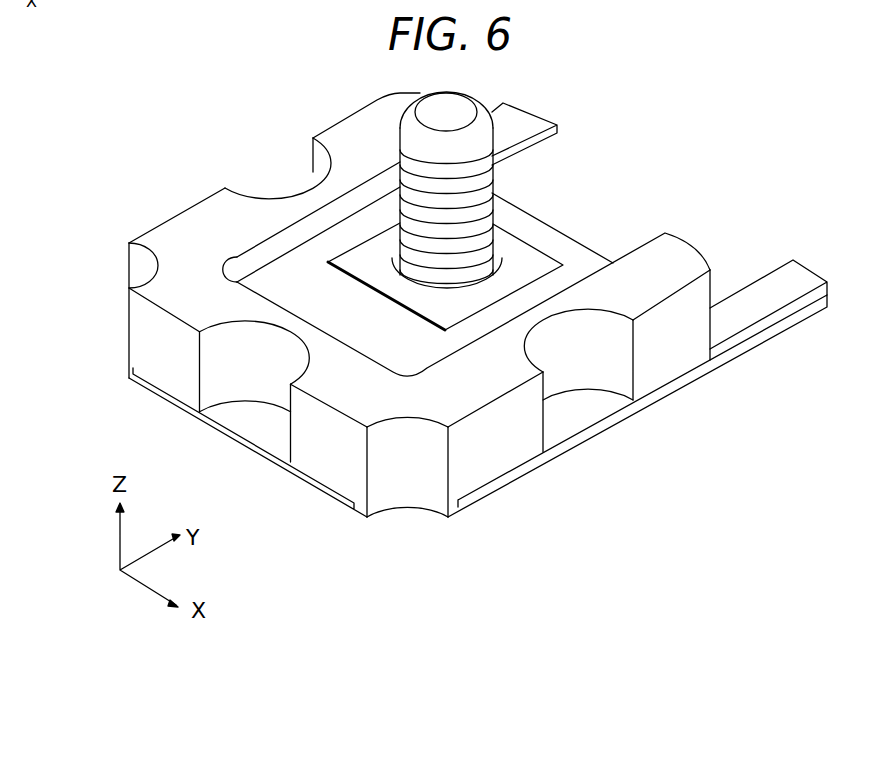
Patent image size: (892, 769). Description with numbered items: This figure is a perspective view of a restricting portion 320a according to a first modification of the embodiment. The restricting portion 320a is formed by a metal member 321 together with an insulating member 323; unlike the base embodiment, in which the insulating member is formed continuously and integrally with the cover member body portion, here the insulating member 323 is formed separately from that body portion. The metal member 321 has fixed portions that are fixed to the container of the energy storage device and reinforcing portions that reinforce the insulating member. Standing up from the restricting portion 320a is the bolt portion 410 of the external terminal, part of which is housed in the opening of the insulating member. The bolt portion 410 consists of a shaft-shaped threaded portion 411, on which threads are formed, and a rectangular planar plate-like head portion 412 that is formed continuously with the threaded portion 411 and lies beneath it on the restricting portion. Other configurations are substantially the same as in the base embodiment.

The bolt portion 410 is at (321, 196).
The threaded portion 411 is at (415, 168).
The head portion 412 is at (373, 270).
The restricting portion 320a is at (478, 375).
The metal member 321 is at (580, 413).
The insulating member 323 is at (478, 305).